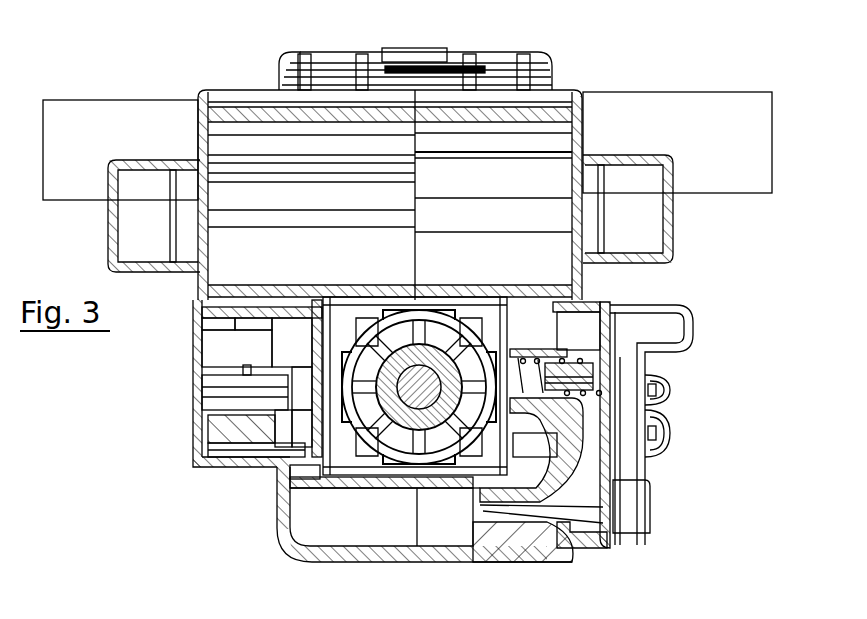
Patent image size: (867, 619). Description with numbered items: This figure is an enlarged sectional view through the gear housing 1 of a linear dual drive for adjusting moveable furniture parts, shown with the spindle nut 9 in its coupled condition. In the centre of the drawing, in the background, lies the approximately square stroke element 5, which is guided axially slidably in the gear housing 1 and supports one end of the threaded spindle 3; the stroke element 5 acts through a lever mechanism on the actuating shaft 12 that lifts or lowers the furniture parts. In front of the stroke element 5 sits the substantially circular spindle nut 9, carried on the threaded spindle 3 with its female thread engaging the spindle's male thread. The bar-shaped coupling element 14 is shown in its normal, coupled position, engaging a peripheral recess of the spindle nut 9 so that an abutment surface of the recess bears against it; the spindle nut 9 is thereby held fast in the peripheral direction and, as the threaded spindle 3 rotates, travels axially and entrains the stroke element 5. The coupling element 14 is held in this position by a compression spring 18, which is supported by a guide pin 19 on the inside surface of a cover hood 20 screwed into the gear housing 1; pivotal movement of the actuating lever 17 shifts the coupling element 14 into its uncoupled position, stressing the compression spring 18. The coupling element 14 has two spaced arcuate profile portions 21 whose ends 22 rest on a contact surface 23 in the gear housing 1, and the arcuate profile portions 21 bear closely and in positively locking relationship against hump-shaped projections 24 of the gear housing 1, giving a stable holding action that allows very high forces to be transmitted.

The gear housing 1 is at (513, 543).
The threaded spindle 3 is at (343, 421).
The stroke element 5 is at (330, 322).
The spindle nut 9 is at (322, 389).
The actuating shaft 12 is at (692, 117).
The coupling element 14 is at (567, 413).
The actuating lever 17 is at (633, 343).
The compression spring 18 is at (600, 305).
The guide pin 19 is at (690, 348).
The cover hood 20 is at (572, 538).
The arcuate profile portions 21 is at (590, 472).
The ends 22 is at (540, 500).
The contact surface 23 is at (618, 530).
The hump-shaped projections 24 is at (547, 450).